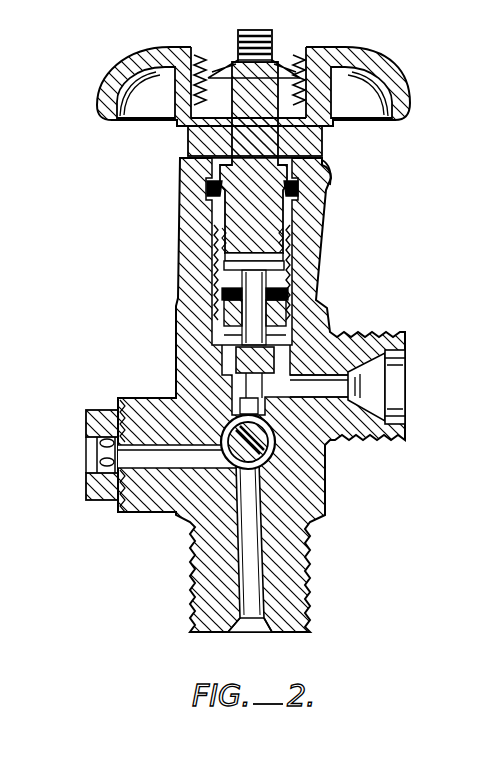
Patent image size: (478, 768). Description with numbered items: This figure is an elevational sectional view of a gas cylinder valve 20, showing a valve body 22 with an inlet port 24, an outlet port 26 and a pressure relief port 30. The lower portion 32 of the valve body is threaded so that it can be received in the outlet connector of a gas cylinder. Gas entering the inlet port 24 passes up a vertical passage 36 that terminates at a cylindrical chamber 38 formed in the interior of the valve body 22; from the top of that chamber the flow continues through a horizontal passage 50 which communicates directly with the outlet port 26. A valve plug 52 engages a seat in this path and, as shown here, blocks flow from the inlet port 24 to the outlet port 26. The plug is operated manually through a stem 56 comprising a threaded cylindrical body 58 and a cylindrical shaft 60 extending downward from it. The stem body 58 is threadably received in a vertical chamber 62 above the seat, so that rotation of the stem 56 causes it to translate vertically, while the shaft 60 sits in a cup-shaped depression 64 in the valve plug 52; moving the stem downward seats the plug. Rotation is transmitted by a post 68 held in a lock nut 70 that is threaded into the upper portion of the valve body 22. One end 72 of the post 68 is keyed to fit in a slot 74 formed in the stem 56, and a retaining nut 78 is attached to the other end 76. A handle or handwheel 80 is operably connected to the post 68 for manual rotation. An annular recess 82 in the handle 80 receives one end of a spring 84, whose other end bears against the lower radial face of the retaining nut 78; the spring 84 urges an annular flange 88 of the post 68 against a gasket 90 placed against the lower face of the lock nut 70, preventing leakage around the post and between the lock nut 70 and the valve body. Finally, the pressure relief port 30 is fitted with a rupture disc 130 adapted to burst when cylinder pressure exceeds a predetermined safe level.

The valve 20 is at (418, 42).
The valve body 22 is at (318, 216).
The inlet port 24 is at (256, 626).
The outlet port 26 is at (390, 386).
The pressure relief port 30 is at (105, 462).
The lower portion of the valve body 32 is at (302, 565).
The vertical passage 36 is at (242, 558).
The cylindrical chamber 38 is at (276, 462).
The horizontal passage 50 is at (313, 388).
The valve plug 52 is at (230, 356).
The stem 56 is at (228, 277).
The threaded cylindrical body 58 is at (228, 266).
The cylindrical shaft 60 is at (230, 300).
The vertical chamber 62 is at (228, 243).
The cup-shaped depression 64 is at (230, 330).
The post 68 is at (246, 152).
The lock nut 70 is at (320, 145).
The one end of the post 72 is at (292, 246).
The slot 74 is at (292, 270).
The other end of the post 76 is at (252, 32).
The retaining nut 78 is at (236, 45).
The handle or handwheel 80 is at (114, 66).
The annular recess 82 is at (303, 60).
The spring 84 is at (228, 68).
The annular flange 88 is at (222, 205).
The gasket 90 is at (330, 172).
The rupture disc 130 is at (100, 450).